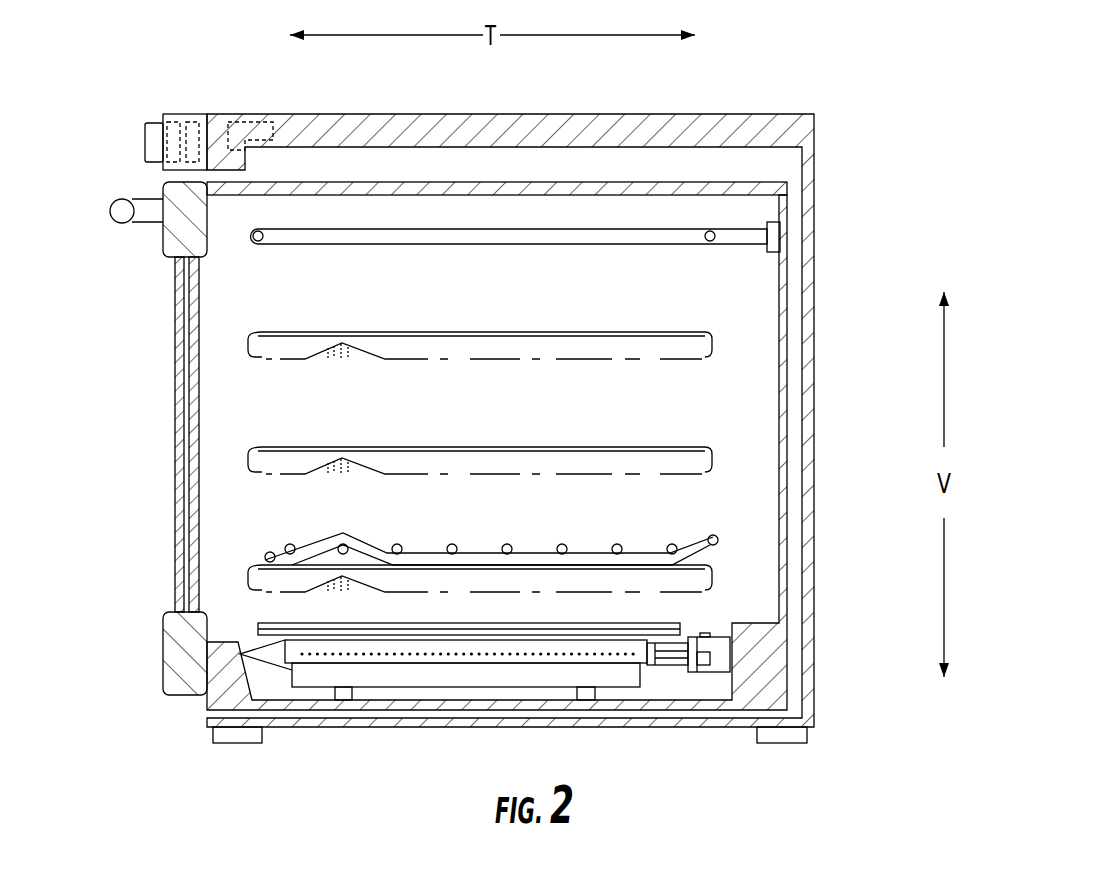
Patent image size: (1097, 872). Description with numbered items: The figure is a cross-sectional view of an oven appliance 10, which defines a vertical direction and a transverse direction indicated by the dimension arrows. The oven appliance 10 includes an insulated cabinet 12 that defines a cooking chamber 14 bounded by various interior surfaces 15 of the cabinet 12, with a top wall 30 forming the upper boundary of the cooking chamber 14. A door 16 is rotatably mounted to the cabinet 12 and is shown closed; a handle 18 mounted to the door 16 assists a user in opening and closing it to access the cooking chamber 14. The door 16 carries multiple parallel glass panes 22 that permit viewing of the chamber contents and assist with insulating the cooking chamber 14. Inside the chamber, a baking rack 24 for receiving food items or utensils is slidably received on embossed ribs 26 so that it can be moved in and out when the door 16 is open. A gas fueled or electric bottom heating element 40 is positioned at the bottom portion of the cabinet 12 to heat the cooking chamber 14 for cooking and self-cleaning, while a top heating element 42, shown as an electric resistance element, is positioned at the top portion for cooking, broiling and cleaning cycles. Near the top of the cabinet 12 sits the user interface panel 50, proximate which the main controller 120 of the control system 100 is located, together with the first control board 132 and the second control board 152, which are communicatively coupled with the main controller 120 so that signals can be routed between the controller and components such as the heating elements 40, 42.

The oven appliance 10 is at (500, 391).
The insulated cabinet 12 is at (744, 125).
The cooking chamber 14 is at (718, 377).
The interior surfaces 15 is at (498, 196).
The door 16 is at (170, 237).
The handle 18 is at (118, 210).
The glass panes 22 is at (173, 437).
The baking rack 24 is at (312, 545).
The embossed ribs 26 is at (692, 575).
The top wall 30 is at (537, 193).
The bottom heating element 40 is at (675, 673).
The top heating element 42 is at (725, 250).
The user interface panel 50 is at (189, 86).
The control system 100 is at (727, 305).
The main controller 120 is at (250, 110).
The first control board 132 is at (170, 113).
The second control board 152 is at (195, 110).